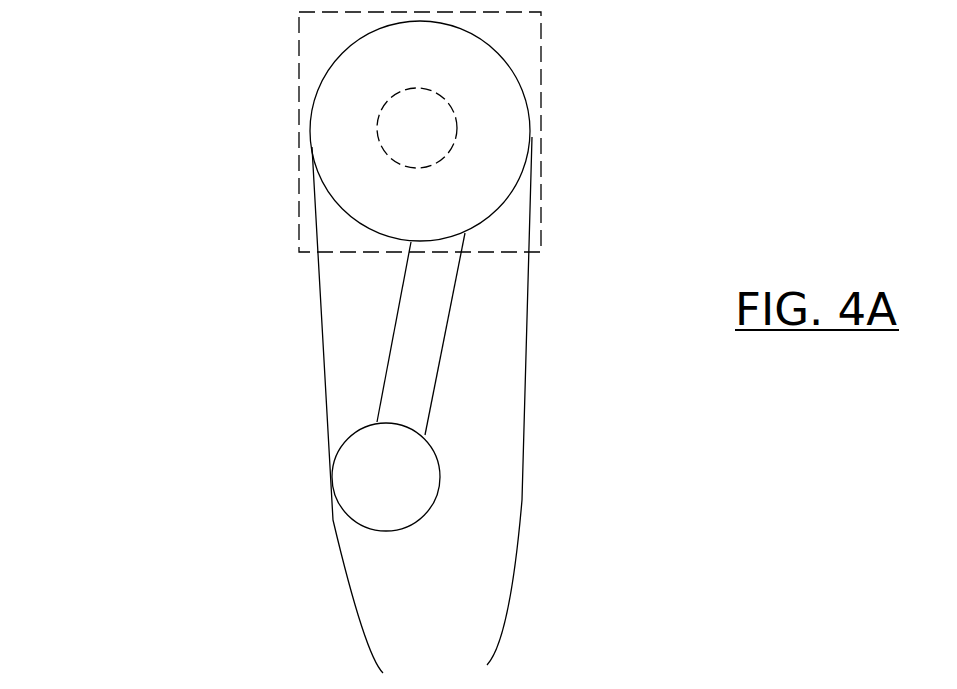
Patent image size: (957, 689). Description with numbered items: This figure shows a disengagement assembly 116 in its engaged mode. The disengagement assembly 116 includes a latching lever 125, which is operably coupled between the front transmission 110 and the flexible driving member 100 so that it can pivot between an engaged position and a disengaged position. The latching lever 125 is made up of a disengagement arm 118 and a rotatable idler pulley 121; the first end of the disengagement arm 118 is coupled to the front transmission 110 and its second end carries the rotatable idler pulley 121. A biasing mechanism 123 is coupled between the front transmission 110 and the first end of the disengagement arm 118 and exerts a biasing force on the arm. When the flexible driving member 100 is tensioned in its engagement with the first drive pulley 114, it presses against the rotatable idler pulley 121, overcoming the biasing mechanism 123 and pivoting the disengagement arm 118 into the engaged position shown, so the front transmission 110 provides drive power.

The flexible driving member 100 is at (477, 405).
The front transmission 110 is at (476, 132).
The first drive pulley 114 is at (470, 131).
The disengagement assembly 116 is at (103, 60).
The disengagement arm 118 is at (342, 311).
The rotatable idler pulley 121 is at (331, 463).
The biasing mechanism 123 is at (321, 104).
The latching lever 125 is at (546, 298).